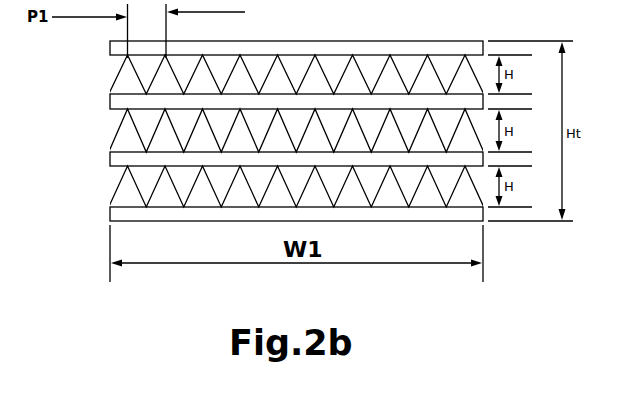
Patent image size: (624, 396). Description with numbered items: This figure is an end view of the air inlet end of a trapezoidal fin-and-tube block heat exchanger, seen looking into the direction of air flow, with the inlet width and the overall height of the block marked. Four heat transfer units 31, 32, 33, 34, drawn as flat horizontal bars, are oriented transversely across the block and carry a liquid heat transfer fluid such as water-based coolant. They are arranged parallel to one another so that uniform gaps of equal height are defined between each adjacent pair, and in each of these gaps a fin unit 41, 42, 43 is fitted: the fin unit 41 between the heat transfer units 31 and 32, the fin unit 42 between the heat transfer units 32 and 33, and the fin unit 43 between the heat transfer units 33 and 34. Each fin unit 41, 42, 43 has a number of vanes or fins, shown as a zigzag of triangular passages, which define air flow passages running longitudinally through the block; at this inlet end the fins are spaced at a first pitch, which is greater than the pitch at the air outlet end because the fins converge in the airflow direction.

The heat transfer unit 31 is at (110, 49).
The fin unit 41 is at (116, 83).
The heat transfer unit 32 is at (110, 107).
The fin unit 42 is at (114, 142).
The heat transfer unit 33 is at (110, 160).
The fin unit 43 is at (115, 190).
The heat transfer unit 34 is at (110, 213).